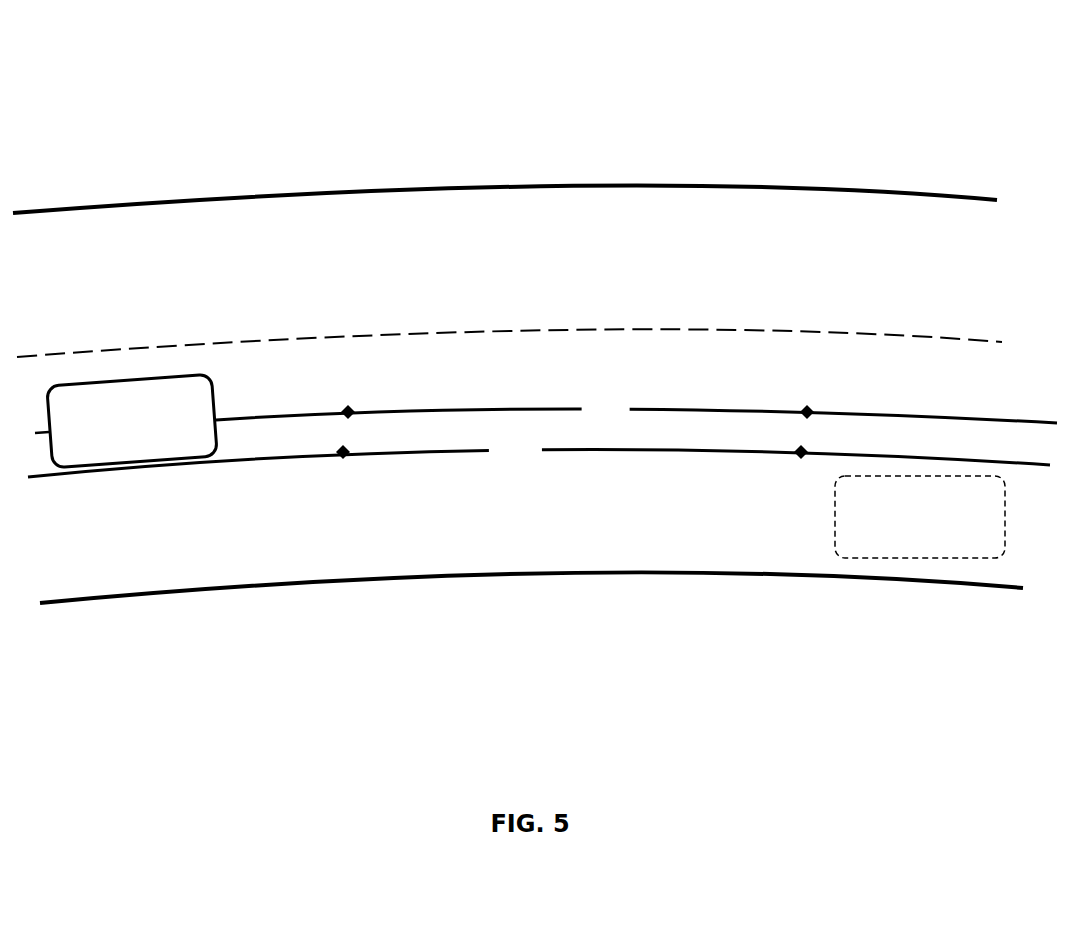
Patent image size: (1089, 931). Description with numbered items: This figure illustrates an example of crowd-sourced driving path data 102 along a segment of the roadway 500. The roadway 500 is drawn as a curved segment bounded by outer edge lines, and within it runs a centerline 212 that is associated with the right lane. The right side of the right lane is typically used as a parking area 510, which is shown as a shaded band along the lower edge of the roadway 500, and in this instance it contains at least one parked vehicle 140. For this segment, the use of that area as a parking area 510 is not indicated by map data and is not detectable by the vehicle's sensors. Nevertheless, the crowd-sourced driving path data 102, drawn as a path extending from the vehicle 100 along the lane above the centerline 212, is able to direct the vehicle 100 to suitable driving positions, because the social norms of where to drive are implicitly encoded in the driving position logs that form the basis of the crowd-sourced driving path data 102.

The roadway 500 is at (902, 133).
The vehicle 100 is at (117, 431).
The crowd-sourced driving path data 102 is at (636, 413).
The centerline 212 is at (539, 461).
The parking area 510 is at (1036, 482).
The parked vehicle 140 is at (903, 536).